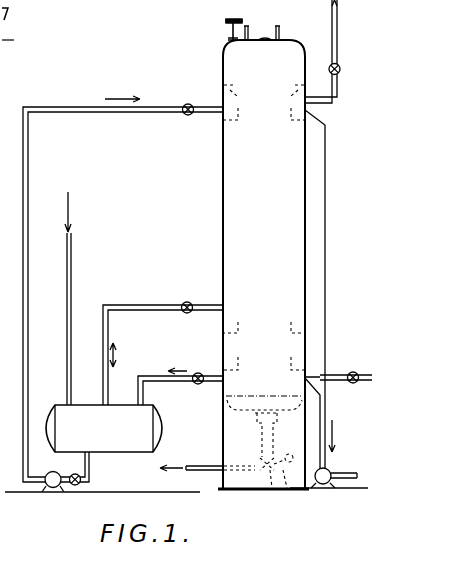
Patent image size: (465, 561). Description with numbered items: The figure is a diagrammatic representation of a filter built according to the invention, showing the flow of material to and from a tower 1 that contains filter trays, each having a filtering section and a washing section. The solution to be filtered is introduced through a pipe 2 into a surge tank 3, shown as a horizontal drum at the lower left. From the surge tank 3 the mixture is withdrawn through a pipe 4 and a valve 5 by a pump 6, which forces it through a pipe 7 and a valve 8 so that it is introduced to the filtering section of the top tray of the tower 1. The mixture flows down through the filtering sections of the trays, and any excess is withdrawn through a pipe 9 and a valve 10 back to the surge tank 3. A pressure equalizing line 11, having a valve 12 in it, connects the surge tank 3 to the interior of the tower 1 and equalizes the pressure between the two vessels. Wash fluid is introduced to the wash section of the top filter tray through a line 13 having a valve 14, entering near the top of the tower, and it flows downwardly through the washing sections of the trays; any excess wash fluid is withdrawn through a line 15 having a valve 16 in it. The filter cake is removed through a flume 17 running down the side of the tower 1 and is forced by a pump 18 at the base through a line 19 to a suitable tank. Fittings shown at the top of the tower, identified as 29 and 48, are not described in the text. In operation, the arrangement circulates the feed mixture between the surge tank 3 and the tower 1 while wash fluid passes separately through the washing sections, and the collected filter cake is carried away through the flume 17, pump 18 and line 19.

The tower 1 is at (263, 264).
The pipe 2 is at (72, 275).
The surge tank 3 is at (120, 455).
The pipe 4 is at (90, 470).
The valve 5 is at (77, 485).
The pump 6 is at (49, 472).
The pipe 7 is at (29, 278).
The valve 8 is at (188, 104).
The pipe 9 is at (152, 376).
The valve 10 is at (197, 388).
The pressure equalizing line 11 is at (145, 306).
The valve 12 is at (189, 302).
The line 13 is at (339, 37).
The valve 14 is at (341, 69).
The line 15 is at (333, 374).
The valve 16 is at (360, 366).
The flume 17 is at (327, 253).
The pump 18 is at (331, 472).
The line 19 is at (340, 480).
The valve 29 is at (230, 31).
The nozzles 48 is at (277, 30).